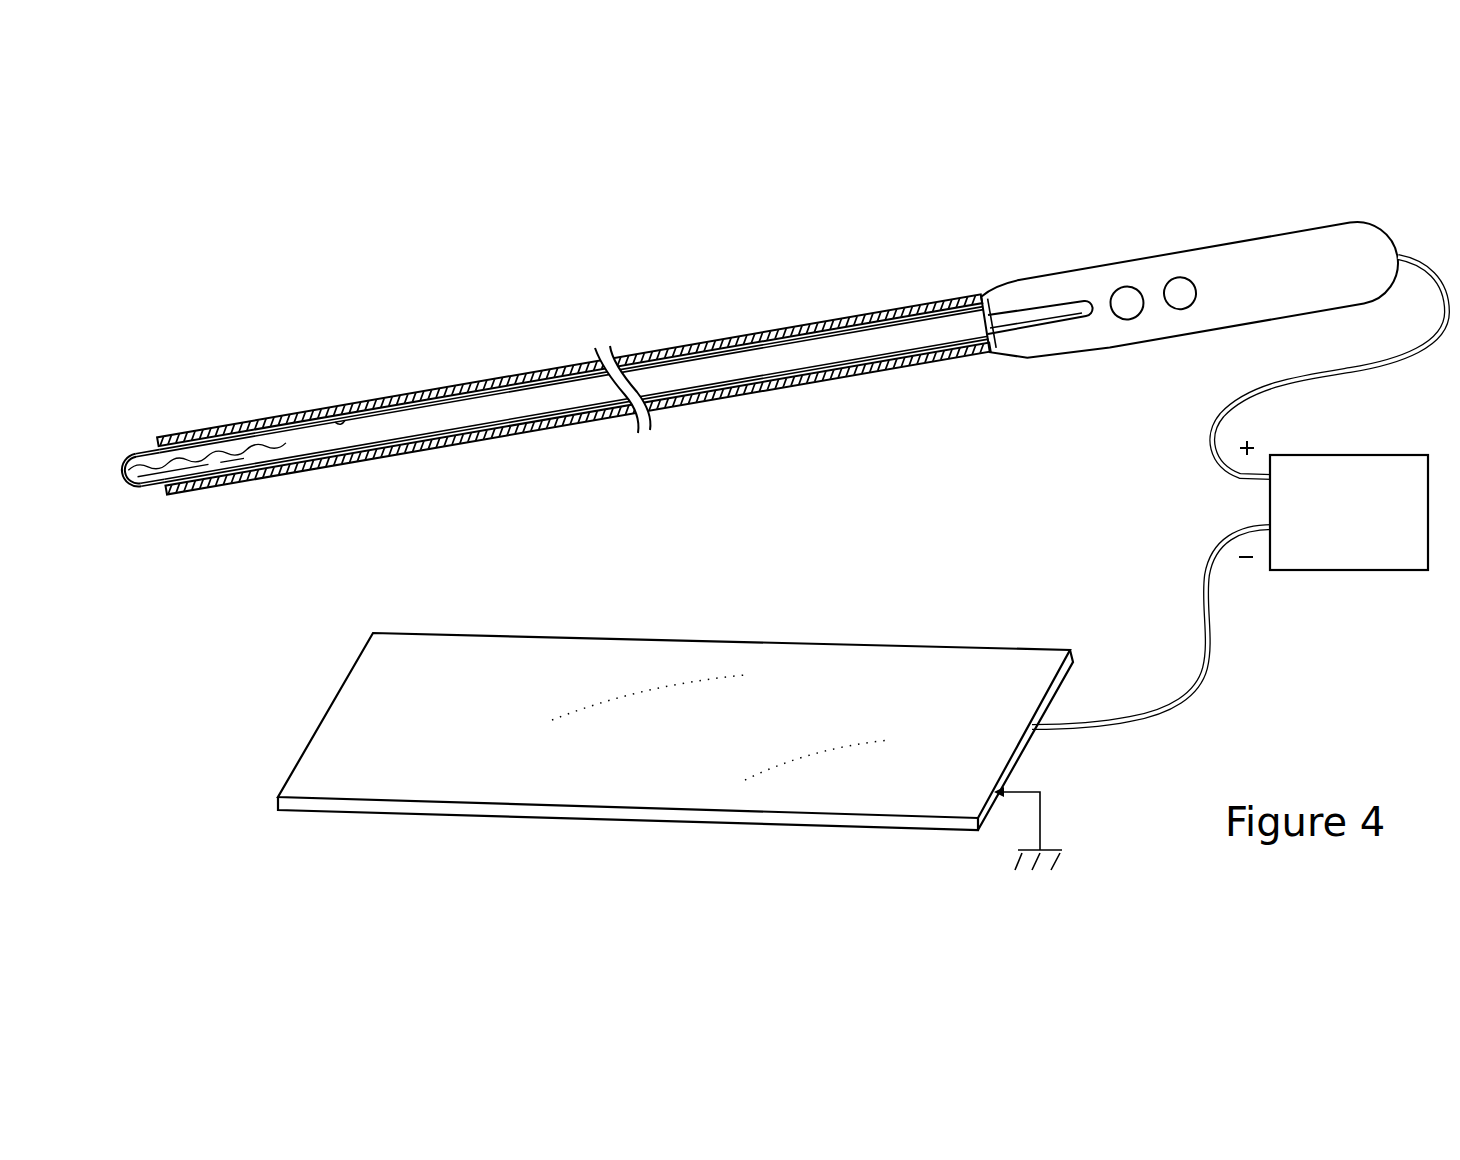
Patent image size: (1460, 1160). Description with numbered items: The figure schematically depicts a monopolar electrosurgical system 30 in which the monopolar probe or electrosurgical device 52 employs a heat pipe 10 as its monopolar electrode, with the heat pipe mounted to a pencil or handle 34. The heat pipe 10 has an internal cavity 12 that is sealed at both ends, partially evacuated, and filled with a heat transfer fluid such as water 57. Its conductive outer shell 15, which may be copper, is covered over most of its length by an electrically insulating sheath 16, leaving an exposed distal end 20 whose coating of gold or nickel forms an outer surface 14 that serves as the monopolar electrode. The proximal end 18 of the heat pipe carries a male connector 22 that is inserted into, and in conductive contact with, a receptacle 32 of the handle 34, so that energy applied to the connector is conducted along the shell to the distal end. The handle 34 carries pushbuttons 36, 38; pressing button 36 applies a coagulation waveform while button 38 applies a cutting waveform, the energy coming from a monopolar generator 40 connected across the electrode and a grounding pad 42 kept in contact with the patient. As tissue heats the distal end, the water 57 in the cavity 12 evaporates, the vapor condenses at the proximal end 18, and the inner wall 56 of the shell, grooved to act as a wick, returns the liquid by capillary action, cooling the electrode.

The heat pipe 10 is at (650, 316).
The internal cavity 12 is at (480, 406).
The outer surface 14 is at (127, 467).
The outer shell 15 is at (410, 394).
The electrically insulating sheath 16 is at (262, 423).
The proximal end 18 is at (969, 258).
The distal end 20 is at (136, 436).
The male connector 22 is at (1082, 316).
The monopolar electrosurgical system 30 is at (806, 267).
The receptacle 32 is at (1061, 305).
The handle 34 is at (1333, 225).
The pushbutton 36 is at (1127, 287).
The pushbutton 38 is at (1183, 277).
The monopolar generator 40 is at (1343, 455).
The grounding pad 42 is at (572, 638).
The electrosurgical device 52 is at (478, 461).
The inner wall 56 is at (337, 417).
The water 57 is at (129, 485).